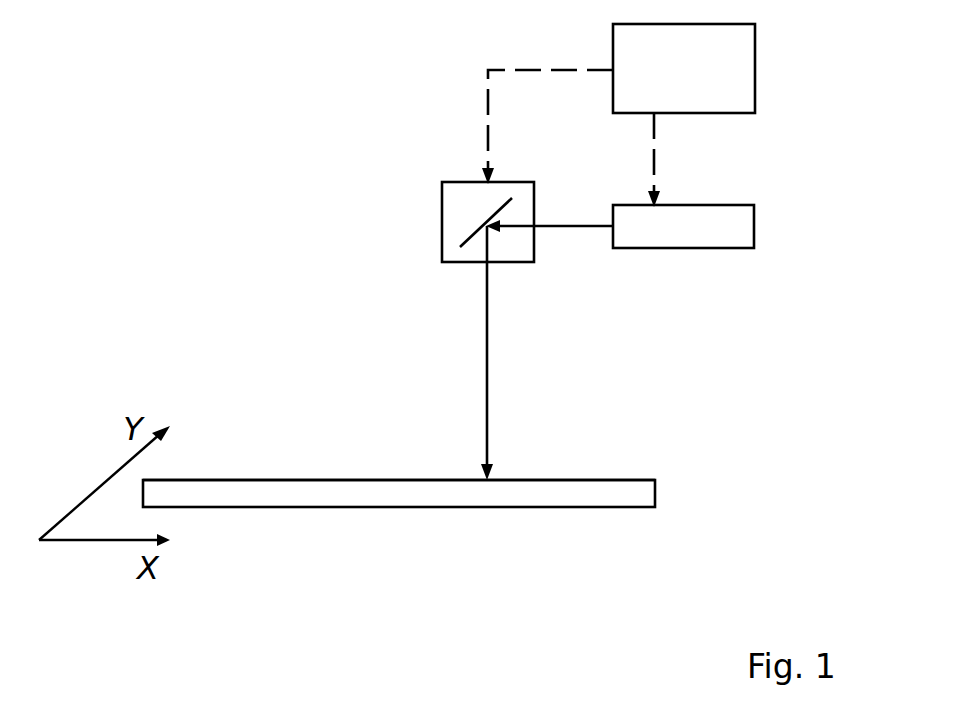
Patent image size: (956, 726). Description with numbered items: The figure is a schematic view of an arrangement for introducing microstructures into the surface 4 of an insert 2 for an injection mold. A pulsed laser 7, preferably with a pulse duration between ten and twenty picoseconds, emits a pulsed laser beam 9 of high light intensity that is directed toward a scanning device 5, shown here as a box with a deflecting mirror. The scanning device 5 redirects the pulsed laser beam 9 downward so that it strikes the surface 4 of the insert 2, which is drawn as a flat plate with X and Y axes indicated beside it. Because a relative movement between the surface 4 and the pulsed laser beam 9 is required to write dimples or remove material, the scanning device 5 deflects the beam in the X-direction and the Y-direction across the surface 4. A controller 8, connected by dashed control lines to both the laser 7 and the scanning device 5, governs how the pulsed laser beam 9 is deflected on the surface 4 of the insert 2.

The insert 2 is at (406, 497).
The surface 4 is at (338, 479).
The scanning device 5 is at (441, 198).
The pulsed laser 7 is at (728, 230).
The controller 8 is at (695, 86).
The pulsed laser beam 9 is at (487, 332).